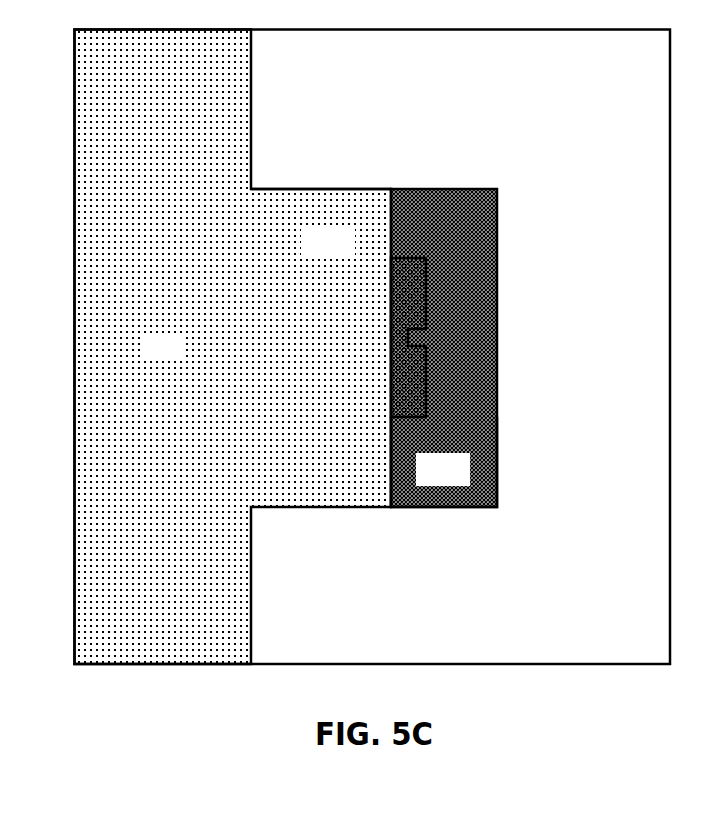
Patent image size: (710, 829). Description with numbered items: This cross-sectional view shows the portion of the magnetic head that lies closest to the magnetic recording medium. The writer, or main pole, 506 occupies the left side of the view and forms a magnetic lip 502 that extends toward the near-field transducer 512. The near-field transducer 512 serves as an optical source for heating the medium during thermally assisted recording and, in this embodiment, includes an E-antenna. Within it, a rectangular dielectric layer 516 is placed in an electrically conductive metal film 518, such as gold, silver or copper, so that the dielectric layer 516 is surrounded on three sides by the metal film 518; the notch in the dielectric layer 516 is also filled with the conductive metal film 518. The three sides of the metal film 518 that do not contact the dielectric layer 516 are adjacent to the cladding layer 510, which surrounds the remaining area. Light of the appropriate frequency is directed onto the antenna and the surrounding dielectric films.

The magnetic lip 502 is at (366, 186).
The writer (main pole) 506 is at (144, 356).
The cladding layer 510 is at (556, 115).
The near-field transducer 512 is at (463, 186).
The dielectric layer 516 is at (406, 316).
The conductive metal film 518 is at (424, 482).